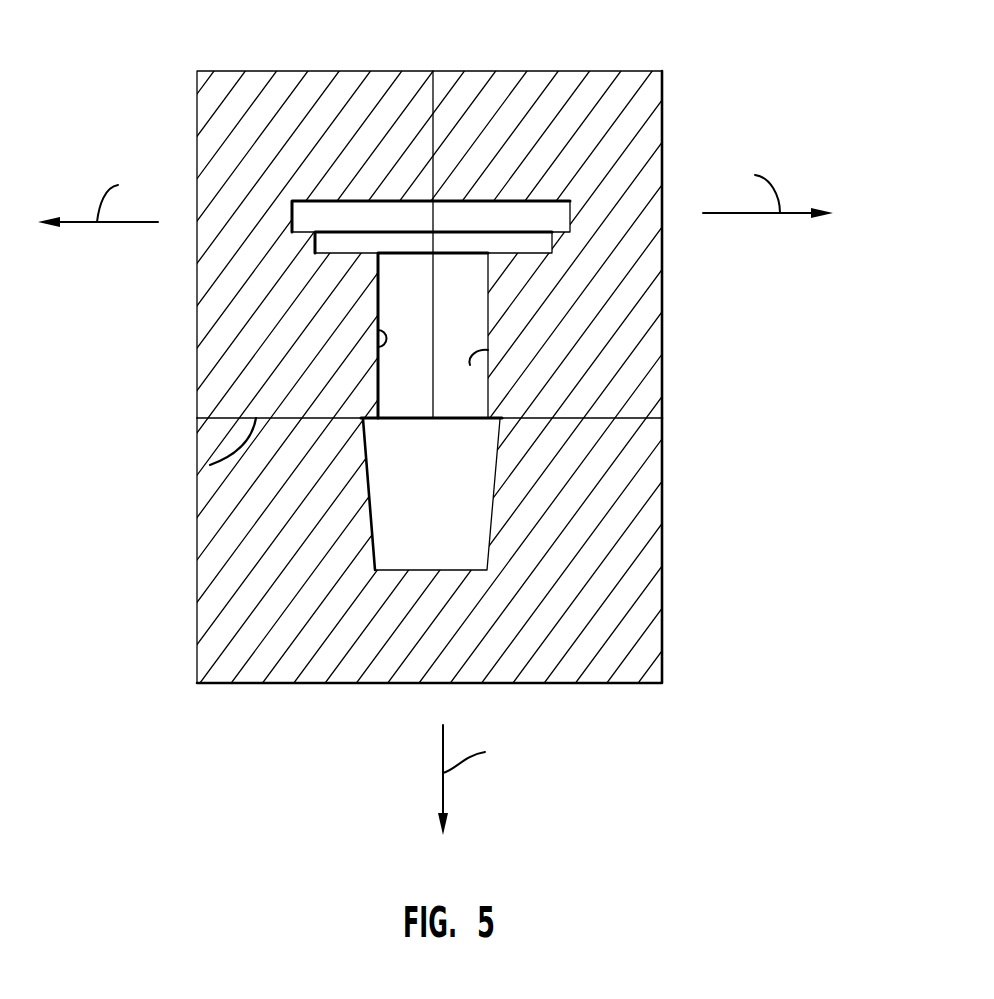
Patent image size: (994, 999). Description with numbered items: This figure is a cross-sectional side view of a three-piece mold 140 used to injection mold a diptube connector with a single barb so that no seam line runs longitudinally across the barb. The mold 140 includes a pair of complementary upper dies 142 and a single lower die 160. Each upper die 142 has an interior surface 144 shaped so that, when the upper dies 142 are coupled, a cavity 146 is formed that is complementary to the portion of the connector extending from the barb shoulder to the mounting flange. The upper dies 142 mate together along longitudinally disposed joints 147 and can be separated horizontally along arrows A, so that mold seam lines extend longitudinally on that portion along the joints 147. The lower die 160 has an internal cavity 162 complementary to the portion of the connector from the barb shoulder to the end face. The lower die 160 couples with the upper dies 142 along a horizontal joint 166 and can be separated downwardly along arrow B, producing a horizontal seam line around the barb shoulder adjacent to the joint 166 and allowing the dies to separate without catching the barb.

The mold 140 is at (738, 333).
The upper dies 142 is at (222, 142).
The interior surface 144 is at (378, 348).
The cavity 146 is at (398, 302).
The joints 147 is at (433, 118).
The lower die 160 is at (633, 572).
The internal cavity 162 is at (453, 526).
The horizontal joint 166 is at (210, 465).